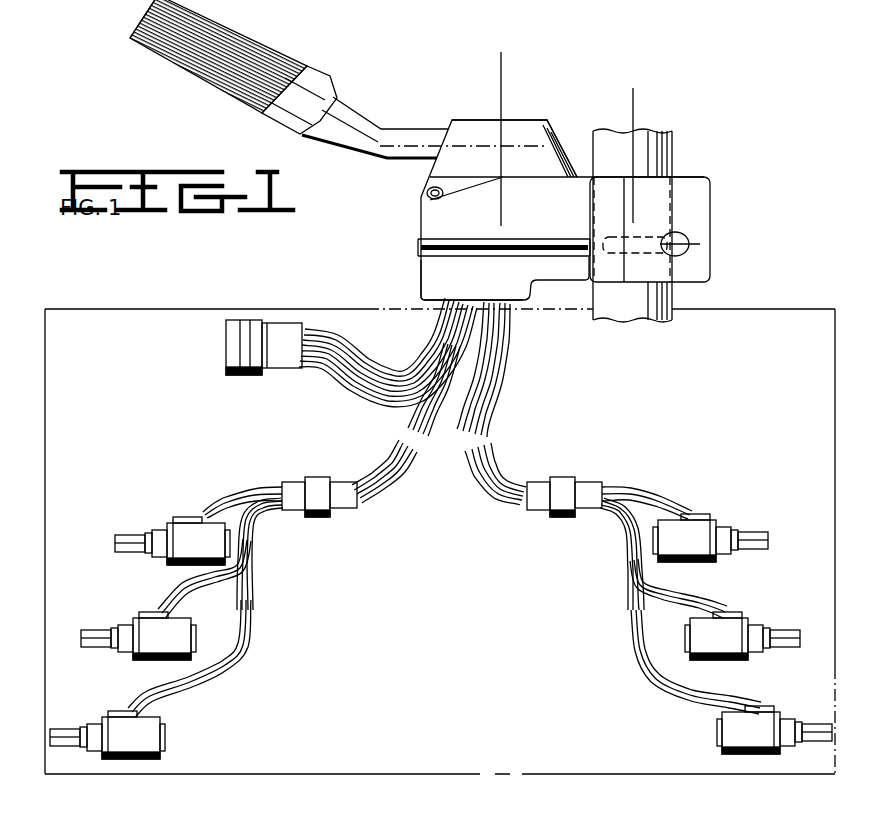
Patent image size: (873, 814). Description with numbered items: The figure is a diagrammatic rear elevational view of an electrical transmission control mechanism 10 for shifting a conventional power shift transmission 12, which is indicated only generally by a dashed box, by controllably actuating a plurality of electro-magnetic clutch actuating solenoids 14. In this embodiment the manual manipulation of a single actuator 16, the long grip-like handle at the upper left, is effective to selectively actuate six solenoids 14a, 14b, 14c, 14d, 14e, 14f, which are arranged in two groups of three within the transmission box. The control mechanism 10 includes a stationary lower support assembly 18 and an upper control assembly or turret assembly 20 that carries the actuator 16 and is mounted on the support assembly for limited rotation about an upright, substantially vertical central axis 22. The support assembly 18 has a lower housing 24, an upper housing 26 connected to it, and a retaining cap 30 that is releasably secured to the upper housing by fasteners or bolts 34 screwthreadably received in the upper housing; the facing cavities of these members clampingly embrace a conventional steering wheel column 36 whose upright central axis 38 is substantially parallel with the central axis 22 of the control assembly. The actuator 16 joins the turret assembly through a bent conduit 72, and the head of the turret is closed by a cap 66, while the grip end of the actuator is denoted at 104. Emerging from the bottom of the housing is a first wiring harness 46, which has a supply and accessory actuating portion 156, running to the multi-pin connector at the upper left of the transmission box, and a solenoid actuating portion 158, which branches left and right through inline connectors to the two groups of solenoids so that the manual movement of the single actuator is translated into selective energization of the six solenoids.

The electrical transmission control mechanism 10 is at (676, 80).
The power shift transmission 12 is at (188, 300).
The clutch actuating solenoids 14 is at (518, 628).
The solenoid 14a is at (182, 522).
The solenoid 14b is at (152, 617).
The solenoid 14c is at (120, 718).
The solenoid 14d is at (700, 524).
The solenoid 14e is at (735, 620).
The solenoid 14f is at (762, 718).
The actuator 16 is at (270, 26).
The lower support assembly 18 is at (418, 232).
The turret assembly 20 is at (461, 114).
The central axis 22 is at (504, 88).
The lower housing 24 is at (430, 270).
The upper housing 26 is at (428, 212).
The retaining cap 30 is at (705, 192).
The bolts 34 is at (690, 244).
The steering wheel column 36 is at (600, 320).
The upright central axis 38 is at (640, 118).
The first wiring harness 46 is at (434, 335).
The cap 66 is at (538, 118).
The conduit 72 is at (350, 112).
The grip 104 is at (135, 3).
The supply and accessory actuating portion 156 is at (337, 400).
The solenoid actuating portion 158 is at (492, 402).